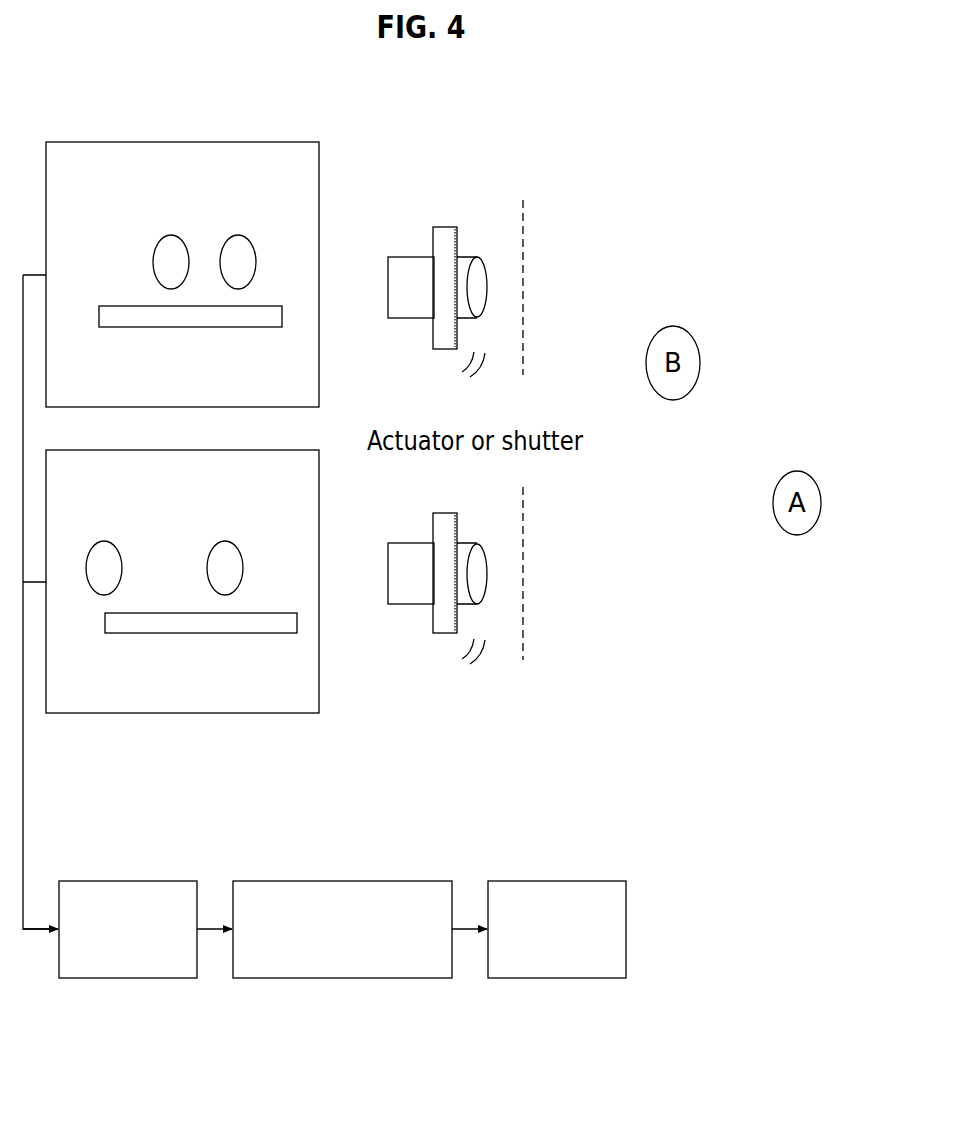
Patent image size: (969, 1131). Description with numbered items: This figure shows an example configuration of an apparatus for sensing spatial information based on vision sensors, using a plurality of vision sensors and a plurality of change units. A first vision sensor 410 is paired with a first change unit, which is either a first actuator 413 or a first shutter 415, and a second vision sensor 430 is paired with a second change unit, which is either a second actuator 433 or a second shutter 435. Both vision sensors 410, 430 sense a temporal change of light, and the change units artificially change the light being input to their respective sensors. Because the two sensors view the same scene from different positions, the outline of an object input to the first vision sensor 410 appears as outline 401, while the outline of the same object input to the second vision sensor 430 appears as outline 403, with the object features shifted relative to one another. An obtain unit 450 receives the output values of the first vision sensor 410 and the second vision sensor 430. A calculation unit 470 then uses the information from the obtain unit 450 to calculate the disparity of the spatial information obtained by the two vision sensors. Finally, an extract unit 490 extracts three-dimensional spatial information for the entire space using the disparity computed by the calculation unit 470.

The outline of object input to first vision sensor 401 is at (184, 139).
The outline of object input to second vision sensor 403 is at (186, 718).
The first vision sensor 410 is at (441, 227).
The first actuator 413 is at (410, 257).
The first shutter 415 is at (523, 287).
The second vision sensor 430 is at (447, 513).
The second actuator 433 is at (410, 543).
The second shutter 435 is at (523, 574).
The obtain unit 450 is at (127, 881).
The calculation unit 470 is at (343, 881).
The extract unit 490 is at (558, 881).